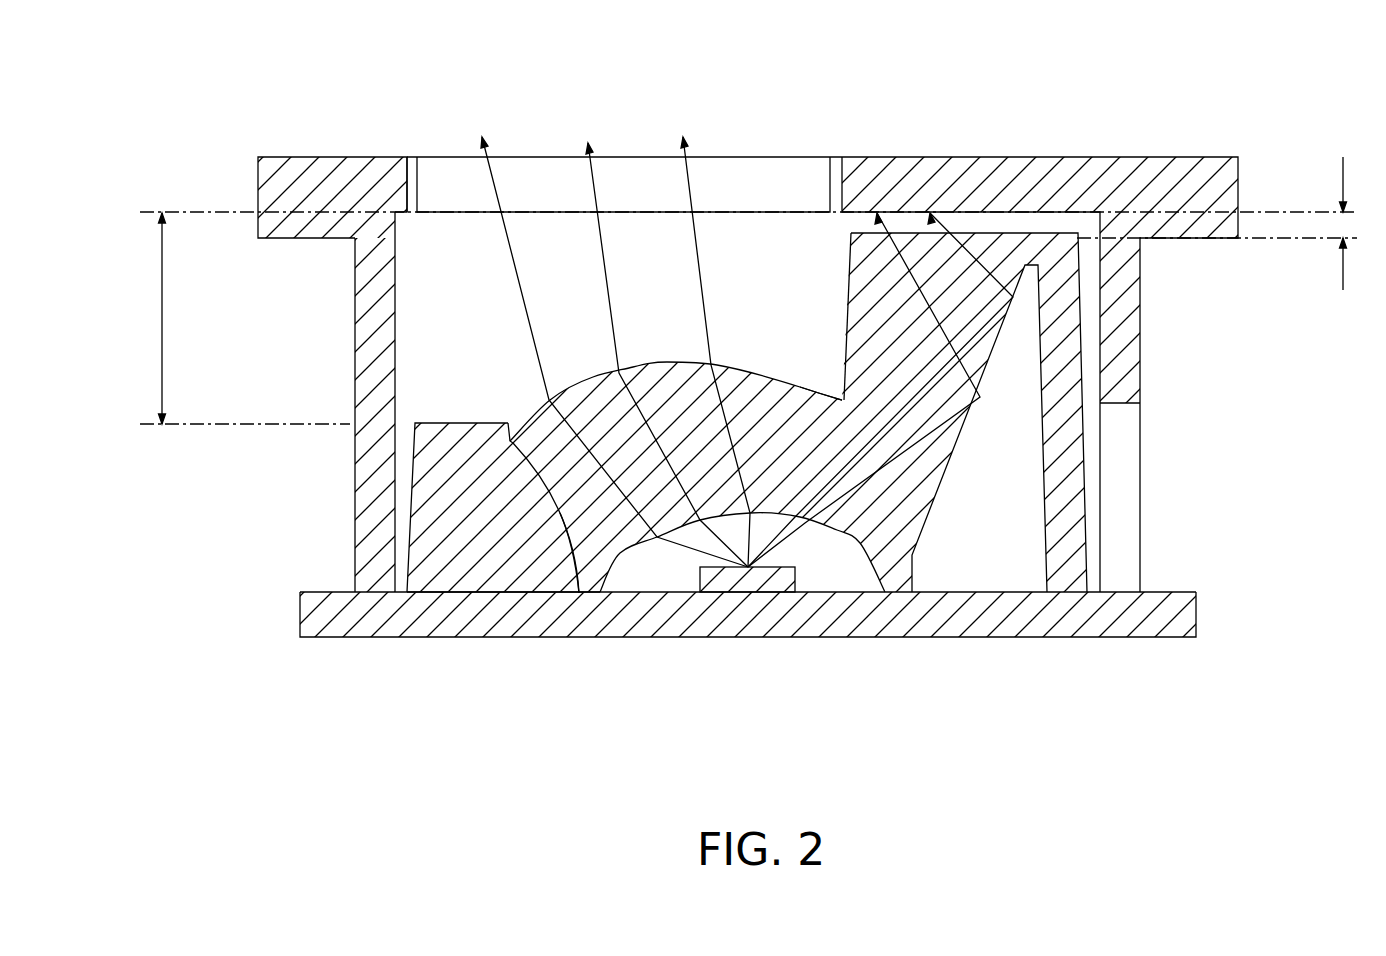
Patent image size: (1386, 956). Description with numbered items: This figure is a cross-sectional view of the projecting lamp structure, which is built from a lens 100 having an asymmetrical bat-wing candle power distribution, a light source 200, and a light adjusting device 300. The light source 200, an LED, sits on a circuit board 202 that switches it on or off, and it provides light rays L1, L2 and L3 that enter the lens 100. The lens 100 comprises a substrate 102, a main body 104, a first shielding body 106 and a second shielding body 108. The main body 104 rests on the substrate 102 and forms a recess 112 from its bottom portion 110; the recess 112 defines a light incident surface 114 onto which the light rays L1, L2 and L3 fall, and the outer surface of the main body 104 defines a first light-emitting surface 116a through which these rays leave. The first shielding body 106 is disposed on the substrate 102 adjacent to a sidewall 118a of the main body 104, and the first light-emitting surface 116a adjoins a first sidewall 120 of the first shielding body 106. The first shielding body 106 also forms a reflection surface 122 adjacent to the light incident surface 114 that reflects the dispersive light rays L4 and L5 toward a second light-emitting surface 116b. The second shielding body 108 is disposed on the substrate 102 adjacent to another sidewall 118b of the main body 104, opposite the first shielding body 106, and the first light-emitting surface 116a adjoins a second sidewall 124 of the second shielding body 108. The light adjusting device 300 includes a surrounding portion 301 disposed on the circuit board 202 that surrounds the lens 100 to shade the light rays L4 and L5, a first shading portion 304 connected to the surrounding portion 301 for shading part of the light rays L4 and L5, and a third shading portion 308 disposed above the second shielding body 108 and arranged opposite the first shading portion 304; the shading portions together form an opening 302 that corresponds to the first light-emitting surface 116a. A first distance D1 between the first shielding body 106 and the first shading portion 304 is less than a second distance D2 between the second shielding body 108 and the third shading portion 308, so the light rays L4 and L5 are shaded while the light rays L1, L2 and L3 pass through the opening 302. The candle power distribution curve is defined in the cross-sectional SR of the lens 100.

The lens 100 is at (767, 396).
The substrate 102 is at (435, 583).
The main body 104 is at (676, 352).
The first shielding body 106 is at (756, 343).
The second shielding body 108 is at (460, 475).
The bottom portion 110 is at (470, 596).
The recess 112 is at (745, 604).
The light incident surface 114 is at (803, 527).
The first light-emitting surface 116a is at (595, 376).
The second light-emitting surface 116b is at (914, 343).
The sidewall of the main body 118a is at (840, 402).
The another sidewall of the main body 118b is at (516, 441).
The first sidewall 120 is at (843, 285).
The reflection surface 122 is at (950, 470).
The second sidewall 124 is at (580, 595).
The light source 200 is at (750, 590).
The circuit board 202 is at (748, 660).
The light adjusting device 300 is at (771, 312).
The surrounding portion 301 is at (368, 300).
The opening 302 is at (638, 180).
The first shading portion 304 is at (1006, 168).
The third shading portion 308 is at (298, 178).
The cross-sectional SR is at (543, 580).
The light ray L1 is at (605, 332).
The light ray L2 is at (660, 337).
The light ray L3 is at (711, 336).
The light ray L4 is at (877, 212).
The light ray L5 is at (930, 212).
The first distance D1 is at (1227, 227).
The second distance D2 is at (738, 318).